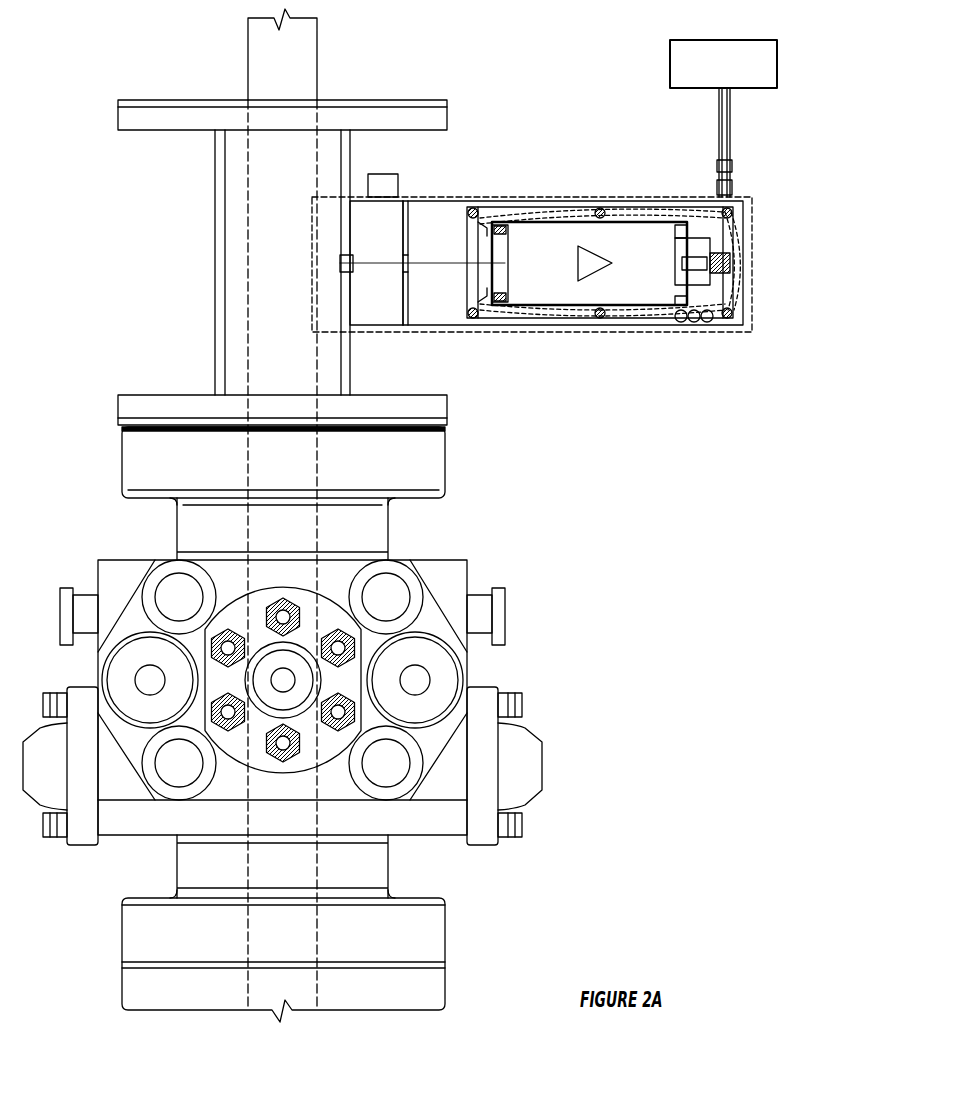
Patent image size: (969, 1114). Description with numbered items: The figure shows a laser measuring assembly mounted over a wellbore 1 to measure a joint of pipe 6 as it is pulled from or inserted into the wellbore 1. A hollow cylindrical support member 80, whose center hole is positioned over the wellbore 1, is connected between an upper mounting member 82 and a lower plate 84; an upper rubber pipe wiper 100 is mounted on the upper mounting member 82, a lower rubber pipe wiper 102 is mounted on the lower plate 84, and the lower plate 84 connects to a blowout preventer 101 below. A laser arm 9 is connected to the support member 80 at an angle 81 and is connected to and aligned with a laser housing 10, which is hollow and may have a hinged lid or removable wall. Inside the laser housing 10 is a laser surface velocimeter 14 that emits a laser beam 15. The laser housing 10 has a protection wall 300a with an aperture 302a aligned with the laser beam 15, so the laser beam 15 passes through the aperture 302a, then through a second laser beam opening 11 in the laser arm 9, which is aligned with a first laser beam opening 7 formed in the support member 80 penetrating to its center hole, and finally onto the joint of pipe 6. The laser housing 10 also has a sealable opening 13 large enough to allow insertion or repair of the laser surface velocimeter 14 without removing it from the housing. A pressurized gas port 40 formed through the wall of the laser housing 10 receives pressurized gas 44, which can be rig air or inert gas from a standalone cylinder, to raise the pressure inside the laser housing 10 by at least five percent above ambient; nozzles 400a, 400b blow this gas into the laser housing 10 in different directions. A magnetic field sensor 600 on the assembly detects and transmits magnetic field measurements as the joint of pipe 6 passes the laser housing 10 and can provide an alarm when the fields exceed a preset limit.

The wellbore 1 is at (445, 990).
The joint of pipe 6 is at (317, 64).
The first laser beam opening 7 is at (338, 262).
The laser arm 9 is at (650, 130).
The laser housing 10 is at (563, 199).
The second laser beam opening 11 is at (356, 261).
The sealable opening 13 is at (727, 290).
The laser surface velocimeter 14 is at (633, 243).
The laser beam 15 is at (390, 266).
The pressurized gas port 40 is at (734, 199).
The pressurized gas 44 is at (777, 64).
The support member 80 is at (214, 229).
The angle 81 is at (400, 328).
The upper mounting member 82 is at (447, 118).
The lower plate 84 is at (447, 408).
The upper rubber pipe wiper 100 is at (447, 108).
The blowout preventer 101 is at (467, 656).
The lower rubber pipe wiper 102 is at (447, 420).
The protection wall 300a is at (405, 224).
The aperture 302a is at (410, 261).
The nozzle 400a is at (481, 231).
The nozzle 400b is at (481, 301).
The magnetic field sensor 600 is at (398, 189).